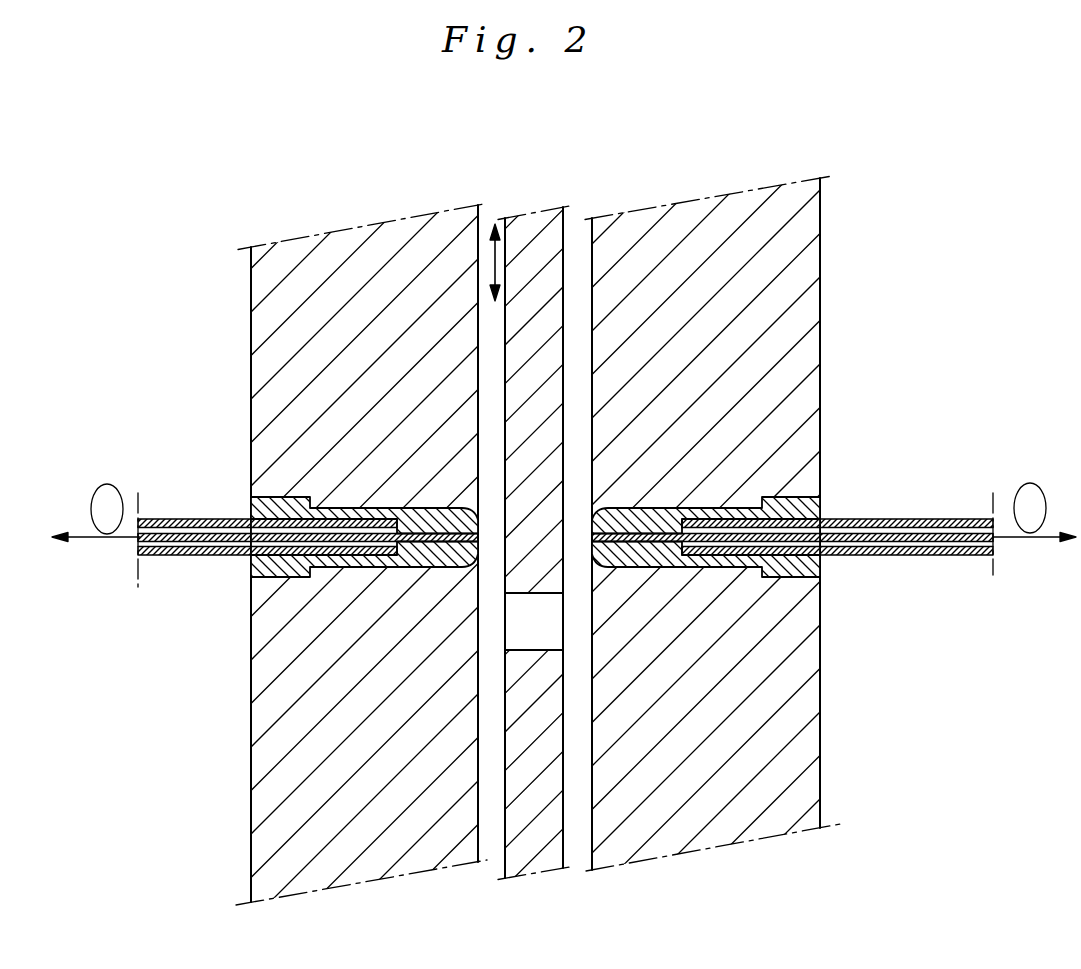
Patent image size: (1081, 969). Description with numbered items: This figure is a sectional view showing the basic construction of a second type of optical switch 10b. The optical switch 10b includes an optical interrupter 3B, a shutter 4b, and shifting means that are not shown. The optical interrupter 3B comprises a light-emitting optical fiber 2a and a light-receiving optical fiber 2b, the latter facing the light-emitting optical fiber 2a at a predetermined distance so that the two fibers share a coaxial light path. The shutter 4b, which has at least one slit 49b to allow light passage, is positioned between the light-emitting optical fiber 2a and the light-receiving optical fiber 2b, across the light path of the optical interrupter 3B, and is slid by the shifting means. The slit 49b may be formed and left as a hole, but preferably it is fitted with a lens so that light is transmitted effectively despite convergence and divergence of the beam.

The optical switch 10b is at (472, 176).
The shutter 4b is at (550, 232).
The slit 49b is at (548, 631).
The optical interrupter 3B is at (565, 606).
The light-emitting optical fiber 2a is at (680, 575).
The light-receiving optical fiber 2b is at (322, 569).